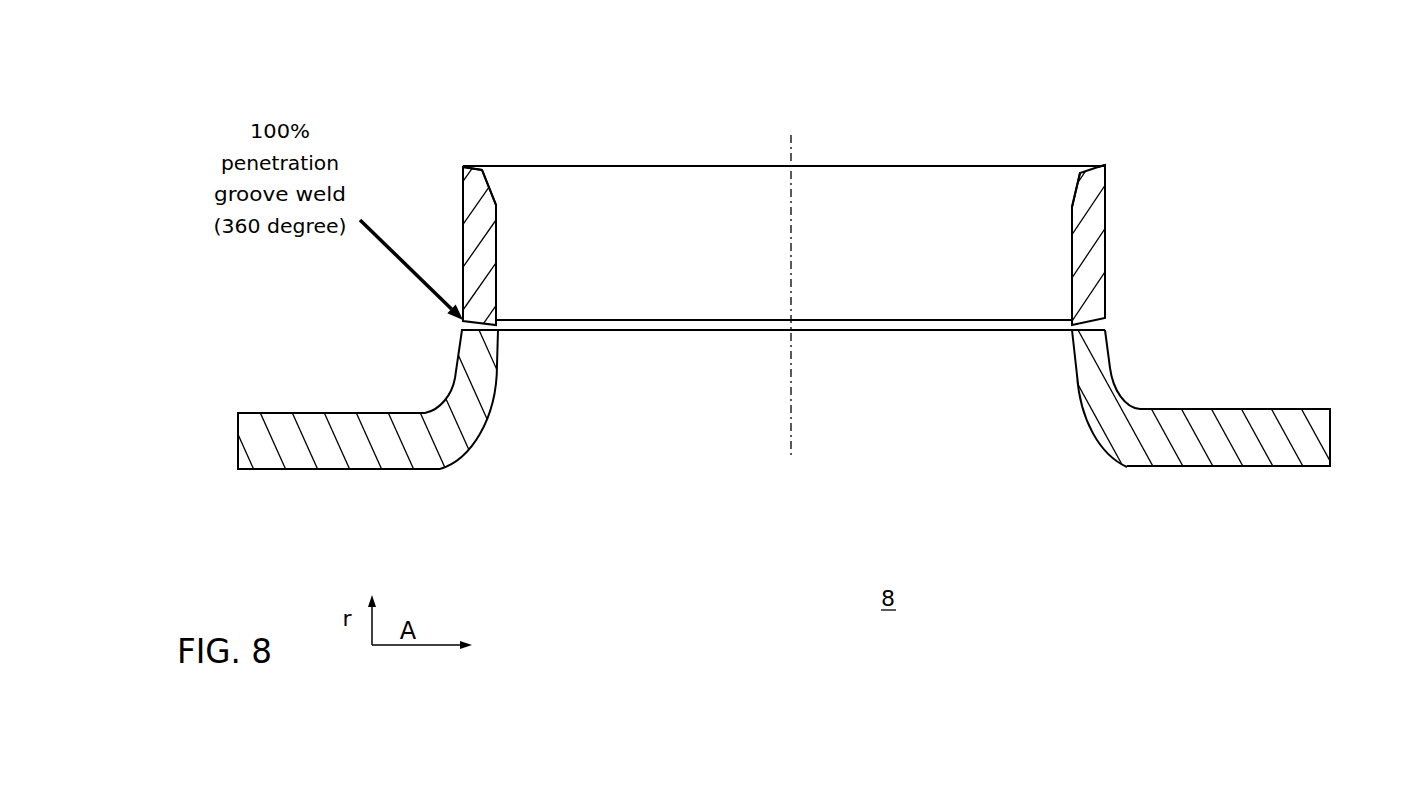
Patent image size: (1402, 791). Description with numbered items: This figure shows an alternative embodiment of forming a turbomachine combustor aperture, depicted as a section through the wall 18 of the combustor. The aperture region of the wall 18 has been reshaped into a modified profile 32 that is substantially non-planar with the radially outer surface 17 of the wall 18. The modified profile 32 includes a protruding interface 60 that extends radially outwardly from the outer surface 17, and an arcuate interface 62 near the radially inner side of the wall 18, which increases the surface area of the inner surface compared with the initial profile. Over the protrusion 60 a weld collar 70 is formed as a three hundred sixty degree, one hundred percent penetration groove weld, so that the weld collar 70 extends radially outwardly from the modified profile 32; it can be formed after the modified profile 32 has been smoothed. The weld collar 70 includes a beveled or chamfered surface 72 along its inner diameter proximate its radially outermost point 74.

The radially outer surface 17 is at (293, 367).
The wall 18 is at (1320, 428).
The modified profile 32 is at (561, 394).
The protruding interface 60 is at (423, 365).
The arcuate interface 62 is at (1046, 412).
The weld collar 70 is at (440, 163).
The beveled or chamfered surface 72 is at (512, 184).
The radially outermost point 74 is at (495, 138).